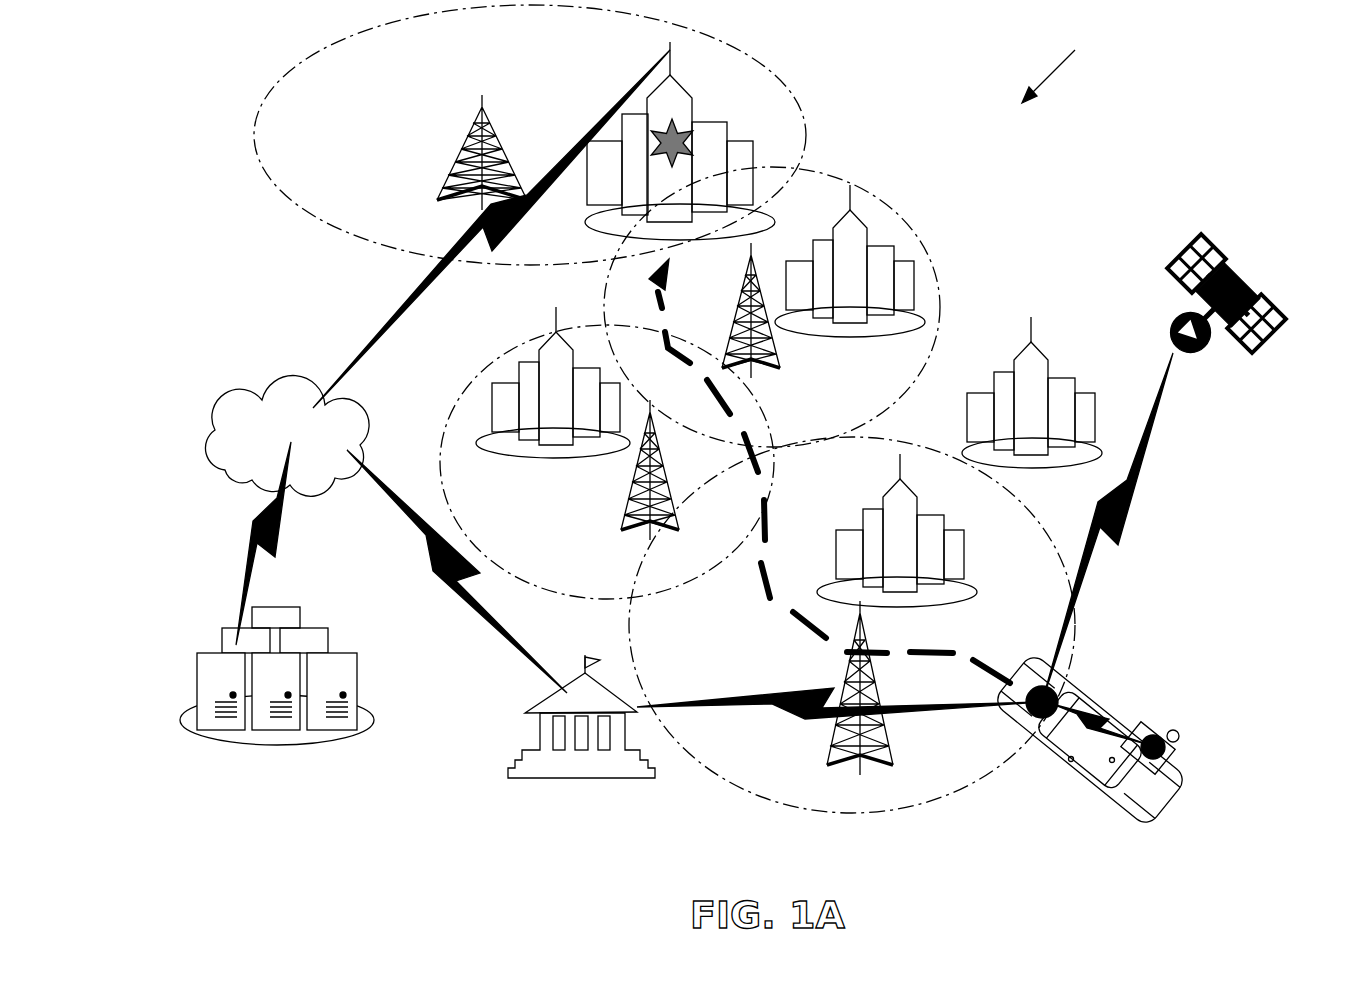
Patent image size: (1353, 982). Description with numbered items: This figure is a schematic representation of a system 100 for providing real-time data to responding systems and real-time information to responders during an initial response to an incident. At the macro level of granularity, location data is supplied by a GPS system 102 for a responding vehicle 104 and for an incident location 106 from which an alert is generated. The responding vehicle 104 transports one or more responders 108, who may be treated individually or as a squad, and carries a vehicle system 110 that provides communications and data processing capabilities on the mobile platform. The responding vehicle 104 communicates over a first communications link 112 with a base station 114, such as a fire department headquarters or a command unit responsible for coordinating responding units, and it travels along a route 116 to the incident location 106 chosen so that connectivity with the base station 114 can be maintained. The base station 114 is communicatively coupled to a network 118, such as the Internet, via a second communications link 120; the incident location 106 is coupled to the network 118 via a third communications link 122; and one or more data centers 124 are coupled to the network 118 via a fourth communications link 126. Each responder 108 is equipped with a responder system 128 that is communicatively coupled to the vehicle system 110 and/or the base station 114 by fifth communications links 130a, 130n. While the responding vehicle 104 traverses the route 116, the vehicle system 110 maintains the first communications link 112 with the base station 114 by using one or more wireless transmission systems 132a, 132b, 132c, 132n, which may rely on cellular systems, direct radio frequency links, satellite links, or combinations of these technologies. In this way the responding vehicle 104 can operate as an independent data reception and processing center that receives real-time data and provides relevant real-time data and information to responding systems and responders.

The system 100 is at (1071, 68).
The GPS system 102 is at (1190, 350).
The responding vehicle 104 is at (1070, 680).
The incident location 106 is at (695, 155).
The responders 108 is at (1180, 740).
The vehicle system 110 is at (1042, 720).
The first communications link 112 is at (790, 703).
The base station 114 is at (550, 705).
The route 116 is at (812, 630).
The network 118 is at (277, 413).
The second communications link 120 is at (402, 498).
The third communications link 122 is at (360, 342).
The data centers 124 is at (342, 675).
The fourth communications link 126 is at (275, 558).
The responder system 128 is at (1158, 762).
The fifth communications link 130a is at (1073, 757).
The fifth communications link 130n is at (1110, 762).
The wireless transmission system 132a is at (873, 770).
The wireless transmission system 132b is at (627, 500).
The wireless transmission system 132c is at (783, 358).
The wireless transmission system 132n is at (470, 160).